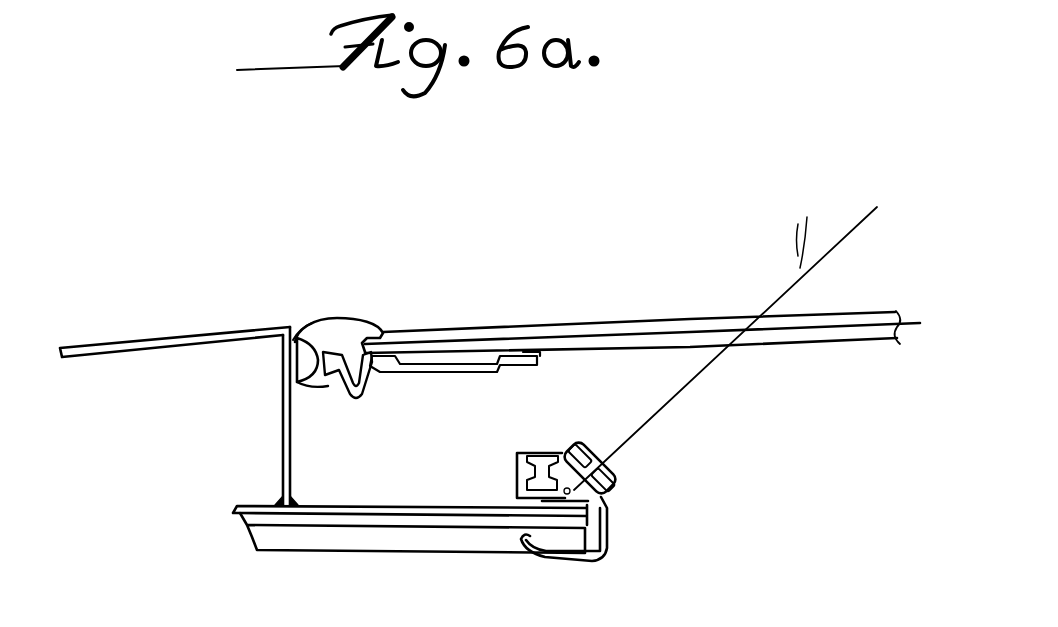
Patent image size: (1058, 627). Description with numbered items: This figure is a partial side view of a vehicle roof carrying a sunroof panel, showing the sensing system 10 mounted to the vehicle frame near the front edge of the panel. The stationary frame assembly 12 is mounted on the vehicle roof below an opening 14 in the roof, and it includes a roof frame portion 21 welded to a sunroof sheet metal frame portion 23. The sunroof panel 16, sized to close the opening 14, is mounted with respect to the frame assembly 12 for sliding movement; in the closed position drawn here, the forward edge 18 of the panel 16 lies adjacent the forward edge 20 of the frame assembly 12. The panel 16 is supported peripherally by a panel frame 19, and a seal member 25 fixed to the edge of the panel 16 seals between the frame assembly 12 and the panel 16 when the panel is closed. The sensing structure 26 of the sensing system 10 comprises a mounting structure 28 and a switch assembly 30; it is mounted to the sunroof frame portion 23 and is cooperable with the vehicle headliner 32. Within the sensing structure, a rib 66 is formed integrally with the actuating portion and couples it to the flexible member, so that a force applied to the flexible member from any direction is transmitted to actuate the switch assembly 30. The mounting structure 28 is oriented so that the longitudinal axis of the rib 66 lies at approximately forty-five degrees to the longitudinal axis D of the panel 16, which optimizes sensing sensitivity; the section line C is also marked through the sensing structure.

The sensing system 10 is at (682, 503).
The frame assembly 12 is at (276, 449).
The opening 14 is at (291, 338).
The sunroof panel 16 is at (558, 325).
The forward edge 18 is at (307, 380).
The panel frame 19 is at (467, 375).
The forward edge 20 is at (283, 327).
The roof frame portion 21 is at (293, 444).
The sunroof sheet metal frame portion 23 is at (394, 504).
The seal member 25 is at (342, 322).
The sensing structure 26 is at (596, 440).
The mounting structure 28 is at (617, 503).
The switch assembly 30 is at (615, 470).
The vehicle headliner 32 is at (431, 540).
The rib 66 is at (557, 444).
The section line C is at (786, 291).
The longitudinal axis D is at (860, 321).